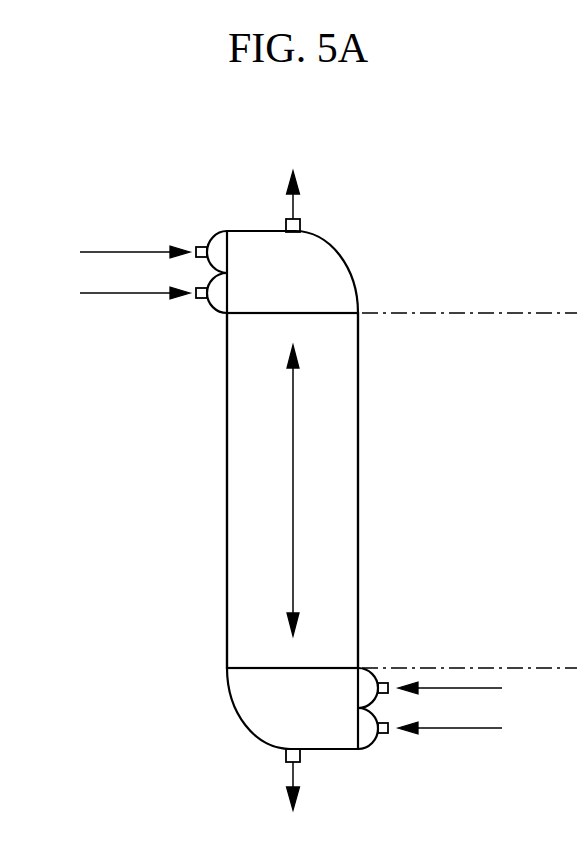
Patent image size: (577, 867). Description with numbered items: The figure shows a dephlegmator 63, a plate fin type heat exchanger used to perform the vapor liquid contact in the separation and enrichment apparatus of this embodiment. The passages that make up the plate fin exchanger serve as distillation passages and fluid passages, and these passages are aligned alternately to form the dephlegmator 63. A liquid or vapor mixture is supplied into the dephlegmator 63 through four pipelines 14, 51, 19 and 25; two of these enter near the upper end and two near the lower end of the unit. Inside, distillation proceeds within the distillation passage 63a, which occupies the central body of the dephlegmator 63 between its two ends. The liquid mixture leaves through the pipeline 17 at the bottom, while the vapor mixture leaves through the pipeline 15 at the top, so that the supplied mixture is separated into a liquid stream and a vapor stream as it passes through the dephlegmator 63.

The pipeline 14 is at (122, 252).
The pipeline 51 is at (140, 293).
The pipeline 15 is at (293, 202).
The dephlegmator 63 is at (377, 262).
The distillation passage 63a is at (345, 540).
The pipeline 25 is at (450, 688).
The pipeline 19 is at (435, 728).
The pipeline 17 is at (290, 776).